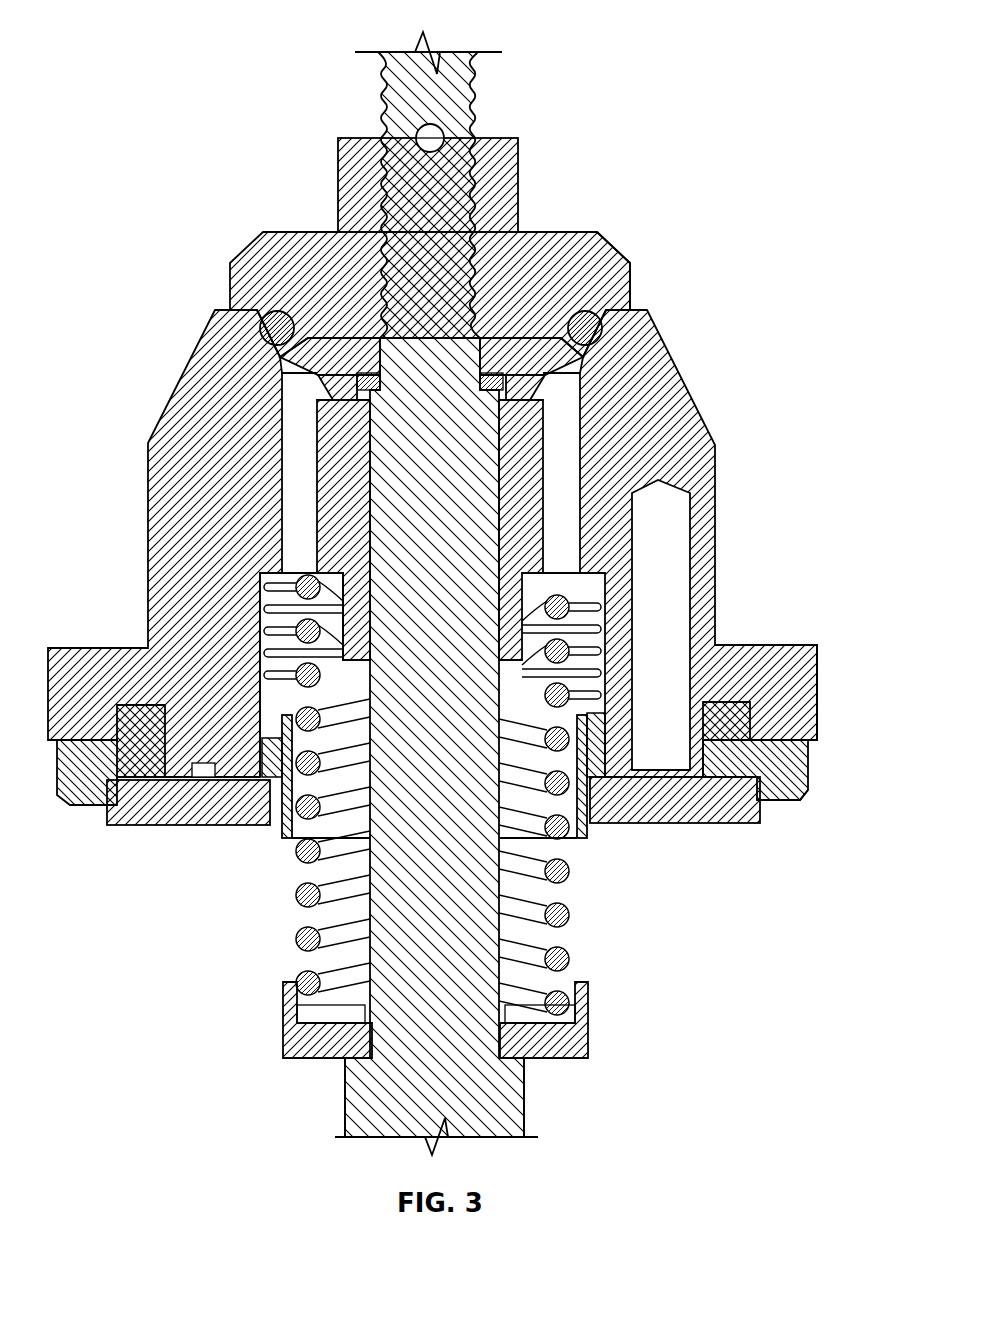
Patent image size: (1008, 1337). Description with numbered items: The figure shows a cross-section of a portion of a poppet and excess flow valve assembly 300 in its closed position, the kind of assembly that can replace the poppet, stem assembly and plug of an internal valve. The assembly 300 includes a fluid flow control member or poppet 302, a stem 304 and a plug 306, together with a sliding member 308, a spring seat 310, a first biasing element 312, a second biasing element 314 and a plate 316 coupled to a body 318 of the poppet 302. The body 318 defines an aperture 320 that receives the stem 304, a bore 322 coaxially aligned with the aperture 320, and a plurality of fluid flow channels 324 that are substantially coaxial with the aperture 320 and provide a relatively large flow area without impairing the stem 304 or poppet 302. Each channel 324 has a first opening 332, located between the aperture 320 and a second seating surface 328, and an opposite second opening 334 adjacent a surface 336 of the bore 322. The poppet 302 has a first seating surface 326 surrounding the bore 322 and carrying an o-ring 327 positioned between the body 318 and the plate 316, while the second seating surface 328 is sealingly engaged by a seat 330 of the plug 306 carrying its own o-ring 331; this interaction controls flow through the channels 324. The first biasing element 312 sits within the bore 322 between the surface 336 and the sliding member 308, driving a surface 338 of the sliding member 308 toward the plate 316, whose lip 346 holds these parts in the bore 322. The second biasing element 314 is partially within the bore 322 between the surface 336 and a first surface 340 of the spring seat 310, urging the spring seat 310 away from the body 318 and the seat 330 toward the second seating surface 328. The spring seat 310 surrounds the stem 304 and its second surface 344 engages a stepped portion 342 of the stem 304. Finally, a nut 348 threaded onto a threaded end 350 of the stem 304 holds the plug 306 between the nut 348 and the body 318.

The poppet and excess flow valve assembly 300 is at (126, 42).
The poppet 302 is at (720, 458).
The stem 304 is at (385, 96).
The plug 306 is at (245, 262).
The sliding member 308 is at (300, 870).
The spring seat 310 is at (598, 1027).
The first biasing element 312 is at (280, 705).
The second biasing element 314 is at (570, 962).
The plate 316 is at (145, 812).
The body 318 is at (810, 690).
The aperture 320 is at (365, 498).
The bore 322 is at (145, 650).
The fluid flow channels 324 is at (300, 460).
The first seating surface 326 is at (790, 800).
The o-ring 327 is at (773, 803).
The second seating surface 328 is at (630, 297).
The seat 330 is at (607, 335).
The o-ring 331 is at (270, 327).
The first opening 332 is at (302, 372).
The second opening 334 is at (300, 585).
The surface 336 is at (600, 590).
The surface 338 is at (600, 800).
The first surface 340 is at (300, 1020).
The stepped portion 342 is at (358, 1061).
The second surface 344 is at (526, 1062).
The lip 346 is at (268, 824).
The nut 348 is at (345, 172).
The threaded end 350 is at (478, 100).